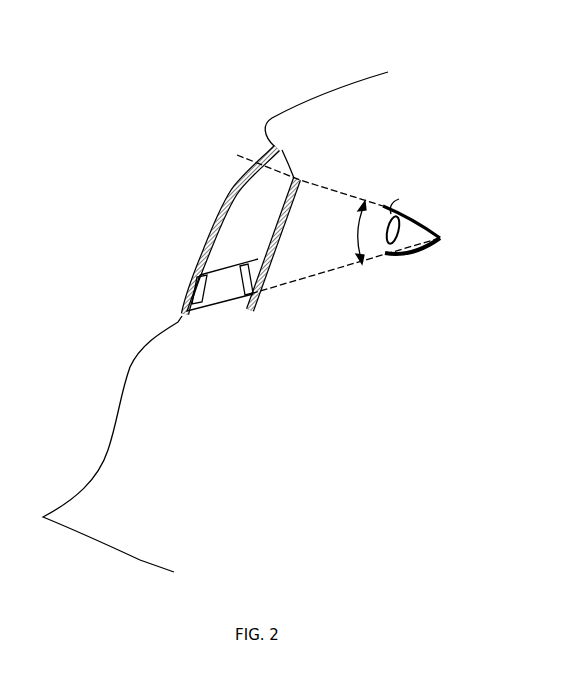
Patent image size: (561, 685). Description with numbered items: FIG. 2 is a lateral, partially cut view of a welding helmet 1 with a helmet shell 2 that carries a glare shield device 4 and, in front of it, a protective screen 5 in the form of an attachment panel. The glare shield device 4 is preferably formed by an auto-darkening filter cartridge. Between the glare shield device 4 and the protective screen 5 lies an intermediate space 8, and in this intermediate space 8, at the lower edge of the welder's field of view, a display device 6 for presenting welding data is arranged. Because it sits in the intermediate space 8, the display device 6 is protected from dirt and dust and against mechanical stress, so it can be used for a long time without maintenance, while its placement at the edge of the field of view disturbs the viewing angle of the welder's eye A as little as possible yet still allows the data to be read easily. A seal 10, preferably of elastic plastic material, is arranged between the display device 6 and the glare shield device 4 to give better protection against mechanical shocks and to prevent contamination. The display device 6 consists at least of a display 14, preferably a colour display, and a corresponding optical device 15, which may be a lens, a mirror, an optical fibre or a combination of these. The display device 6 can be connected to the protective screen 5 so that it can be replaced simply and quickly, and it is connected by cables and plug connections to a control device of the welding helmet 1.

The welding helmet 1 is at (418, 84).
The helmet shell 2 is at (128, 426).
The glare shield device 4 is at (301, 204).
The protective screen 5 is at (218, 208).
The display device 6 is at (232, 262).
The intermediate space 8 is at (258, 194).
The seal 10 is at (255, 258).
The display 14 is at (217, 305).
The optical device 15 is at (268, 288).
The eye A is at (413, 230).